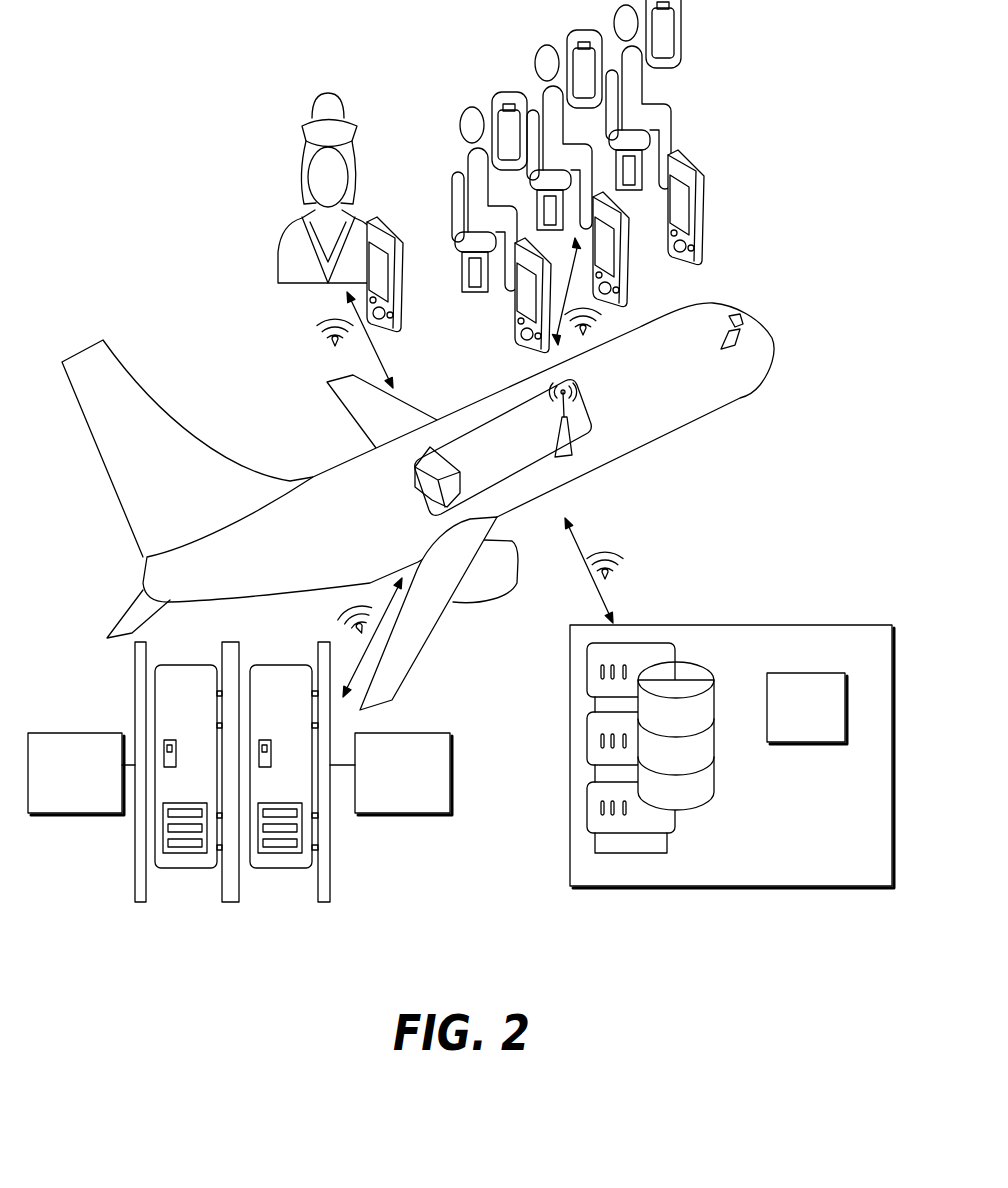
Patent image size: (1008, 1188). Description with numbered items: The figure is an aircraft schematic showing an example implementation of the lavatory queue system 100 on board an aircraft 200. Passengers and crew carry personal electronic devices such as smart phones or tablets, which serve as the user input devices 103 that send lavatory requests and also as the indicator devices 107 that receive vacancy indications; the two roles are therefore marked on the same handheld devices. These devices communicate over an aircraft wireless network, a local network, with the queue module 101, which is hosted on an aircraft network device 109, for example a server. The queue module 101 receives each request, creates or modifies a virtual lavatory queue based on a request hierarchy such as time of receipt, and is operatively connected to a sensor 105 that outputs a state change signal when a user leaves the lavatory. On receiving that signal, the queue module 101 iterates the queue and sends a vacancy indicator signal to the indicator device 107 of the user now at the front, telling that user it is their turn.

The queue system 100 is at (773, 503).
The queue module 101 is at (828, 721).
The user input device 103 is at (397, 283).
The sensor 105 is at (95, 787).
The indicator device 107 is at (479, 183).
The aircraft network device 109 is at (732, 756).
The aircraft 200 is at (767, 365).